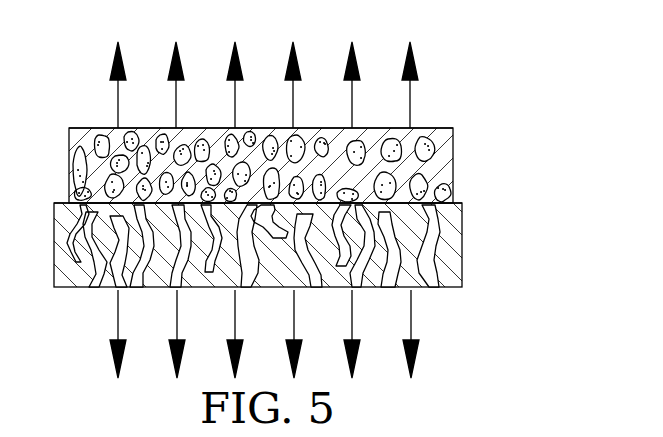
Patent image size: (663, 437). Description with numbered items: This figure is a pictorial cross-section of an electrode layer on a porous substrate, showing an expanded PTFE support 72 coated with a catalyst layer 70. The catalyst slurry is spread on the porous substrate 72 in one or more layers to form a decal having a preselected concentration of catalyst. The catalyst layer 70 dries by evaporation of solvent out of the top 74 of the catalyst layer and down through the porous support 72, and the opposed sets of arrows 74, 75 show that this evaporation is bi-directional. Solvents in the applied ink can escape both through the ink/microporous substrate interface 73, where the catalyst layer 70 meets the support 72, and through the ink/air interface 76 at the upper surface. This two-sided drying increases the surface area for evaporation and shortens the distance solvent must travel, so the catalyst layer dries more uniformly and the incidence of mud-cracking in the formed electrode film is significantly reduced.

The catalyst layer 70 is at (455, 165).
The expanded PTFE support 72 is at (462, 248).
The ink/microporous substrate interface 73 is at (458, 204).
The top of the catalyst layer 74 is at (112, 100).
The arrows indicating evaporation through the porous support 75 is at (110, 320).
The ink/air interface 76 is at (438, 128).